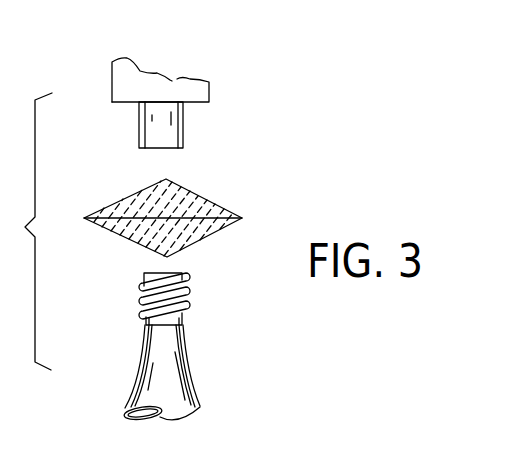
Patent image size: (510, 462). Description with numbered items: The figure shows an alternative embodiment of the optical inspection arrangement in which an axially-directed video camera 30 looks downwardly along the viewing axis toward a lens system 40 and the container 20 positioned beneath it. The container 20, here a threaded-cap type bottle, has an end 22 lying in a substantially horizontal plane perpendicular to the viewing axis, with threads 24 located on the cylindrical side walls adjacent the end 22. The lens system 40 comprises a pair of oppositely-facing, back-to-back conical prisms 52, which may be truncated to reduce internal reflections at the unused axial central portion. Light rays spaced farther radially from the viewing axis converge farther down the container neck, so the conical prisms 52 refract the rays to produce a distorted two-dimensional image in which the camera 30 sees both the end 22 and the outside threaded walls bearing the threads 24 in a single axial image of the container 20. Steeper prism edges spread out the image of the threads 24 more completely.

The container 20 is at (197, 400).
The end 22 is at (192, 292).
The threads 24 is at (186, 308).
The video camera 30 is at (170, 84).
The lens system 40 is at (151, 221).
The conical prisms 52 is at (101, 228).